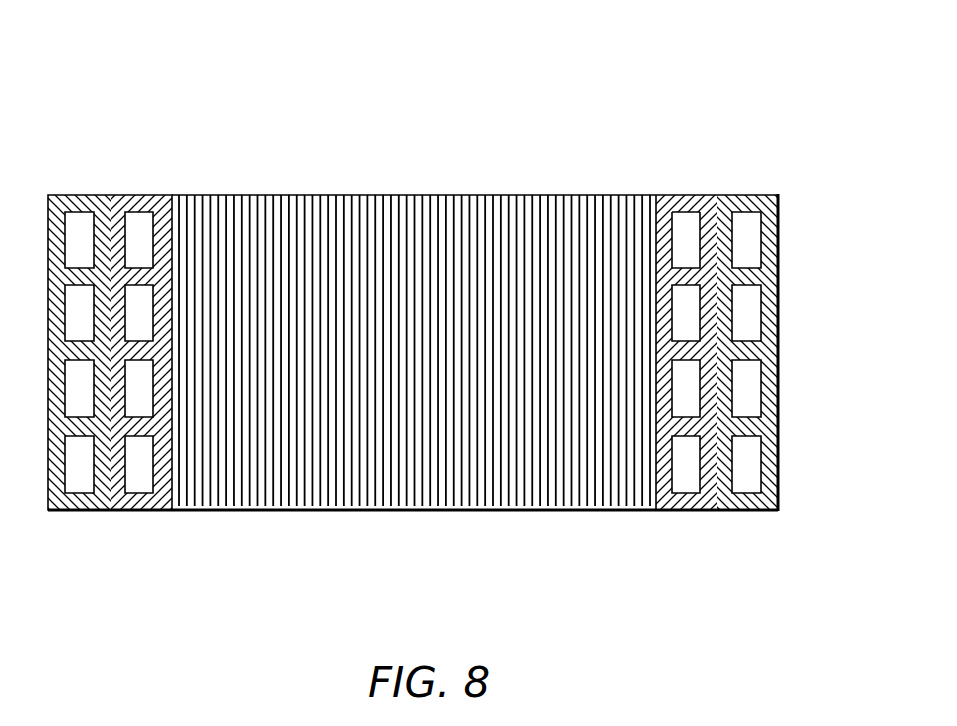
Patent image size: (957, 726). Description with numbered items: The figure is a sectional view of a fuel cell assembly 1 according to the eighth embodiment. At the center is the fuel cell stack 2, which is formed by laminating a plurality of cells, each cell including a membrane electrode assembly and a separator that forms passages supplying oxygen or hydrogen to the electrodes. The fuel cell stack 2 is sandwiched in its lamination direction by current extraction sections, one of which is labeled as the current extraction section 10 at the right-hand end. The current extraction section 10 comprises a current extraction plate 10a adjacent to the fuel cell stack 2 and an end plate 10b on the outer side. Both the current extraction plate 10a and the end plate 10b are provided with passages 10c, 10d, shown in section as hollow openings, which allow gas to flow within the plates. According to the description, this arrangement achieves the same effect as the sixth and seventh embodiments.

The fuel cell assembly 1 is at (352, 193).
The fuel cell stack 2 is at (430, 225).
The current extraction section 10 is at (688, 510).
The current extraction plate 10a is at (685, 200).
The end plate 10b is at (780, 208).
The passage 10c is at (678, 330).
The passage 10d is at (745, 255).